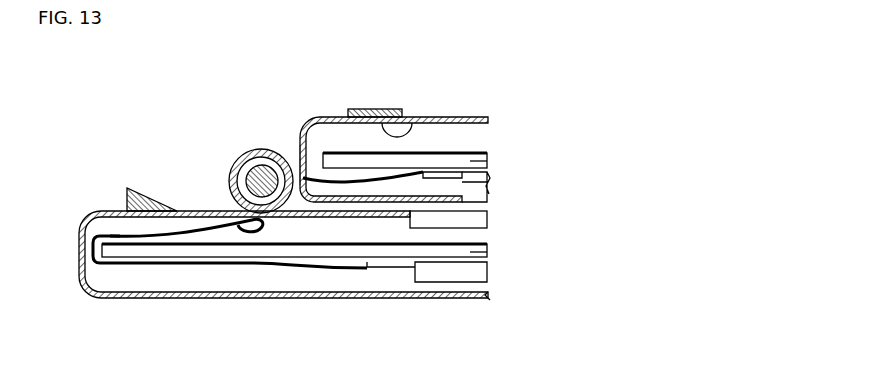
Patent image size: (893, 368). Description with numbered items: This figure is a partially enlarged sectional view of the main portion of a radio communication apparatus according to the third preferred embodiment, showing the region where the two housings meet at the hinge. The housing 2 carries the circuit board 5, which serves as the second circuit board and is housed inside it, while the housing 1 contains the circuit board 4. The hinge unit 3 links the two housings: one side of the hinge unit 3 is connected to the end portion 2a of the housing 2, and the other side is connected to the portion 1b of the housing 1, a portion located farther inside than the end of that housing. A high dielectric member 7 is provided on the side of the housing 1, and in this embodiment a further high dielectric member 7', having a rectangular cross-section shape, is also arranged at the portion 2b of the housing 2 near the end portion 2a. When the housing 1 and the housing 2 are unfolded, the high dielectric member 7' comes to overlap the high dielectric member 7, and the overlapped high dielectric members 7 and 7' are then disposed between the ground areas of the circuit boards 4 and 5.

The housing 1 is at (488, 298).
The portion 1b is at (245, 222).
The housing 2 is at (480, 117).
The end portion 2a is at (299, 135).
The portion 2b is at (418, 124).
The hinge unit 3 is at (247, 149).
The circuit board 4 is at (488, 253).
The circuit board 5 is at (488, 163).
The high dielectric member 7 is at (118, 192).
The high dielectric member 7' is at (375, 83).